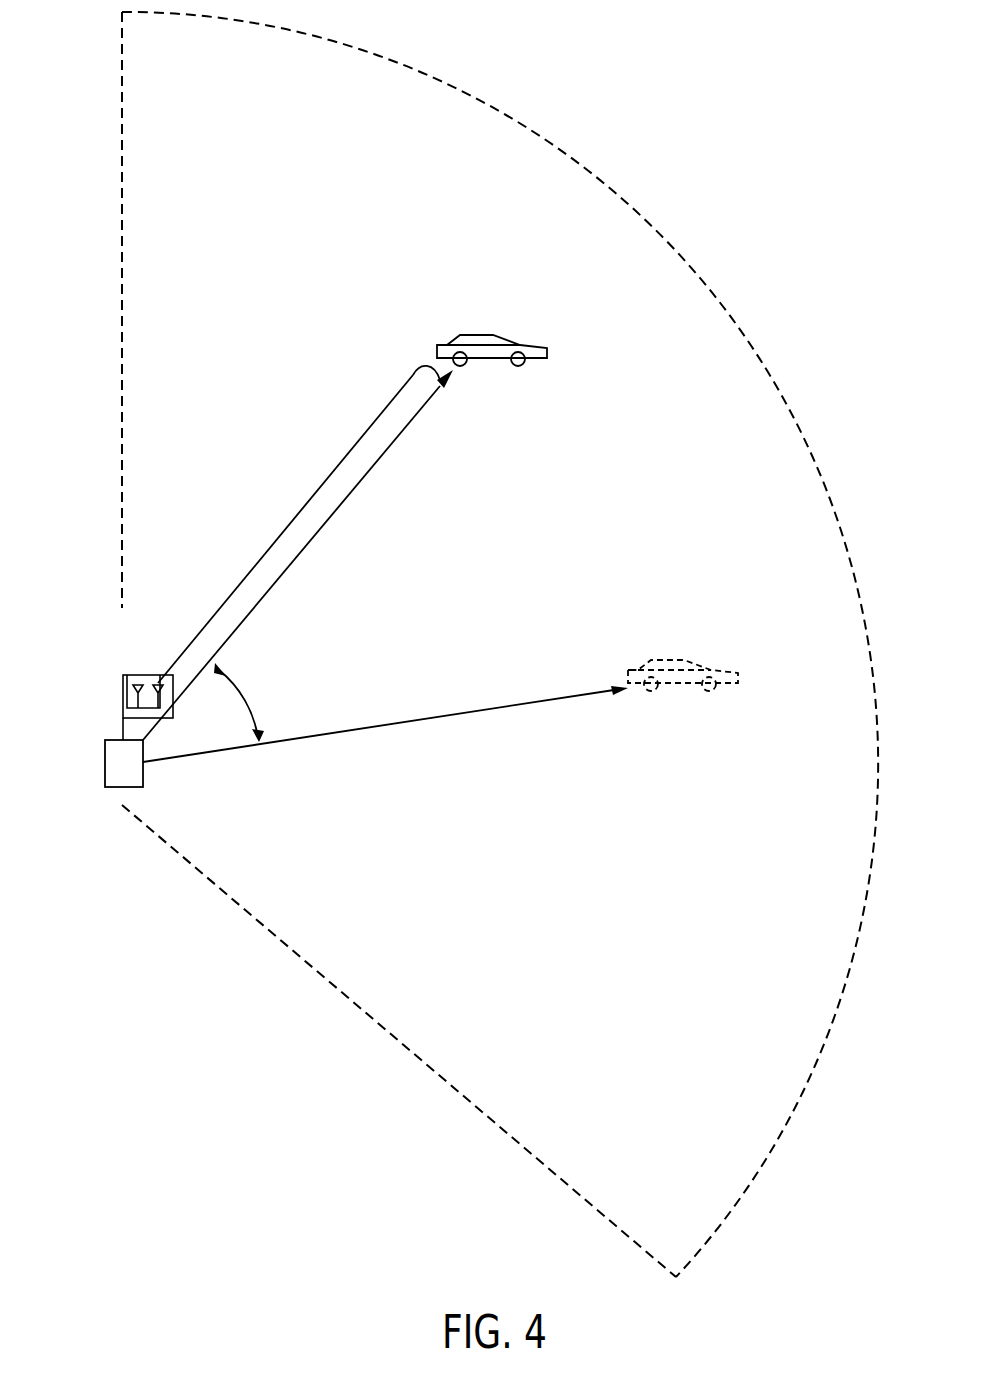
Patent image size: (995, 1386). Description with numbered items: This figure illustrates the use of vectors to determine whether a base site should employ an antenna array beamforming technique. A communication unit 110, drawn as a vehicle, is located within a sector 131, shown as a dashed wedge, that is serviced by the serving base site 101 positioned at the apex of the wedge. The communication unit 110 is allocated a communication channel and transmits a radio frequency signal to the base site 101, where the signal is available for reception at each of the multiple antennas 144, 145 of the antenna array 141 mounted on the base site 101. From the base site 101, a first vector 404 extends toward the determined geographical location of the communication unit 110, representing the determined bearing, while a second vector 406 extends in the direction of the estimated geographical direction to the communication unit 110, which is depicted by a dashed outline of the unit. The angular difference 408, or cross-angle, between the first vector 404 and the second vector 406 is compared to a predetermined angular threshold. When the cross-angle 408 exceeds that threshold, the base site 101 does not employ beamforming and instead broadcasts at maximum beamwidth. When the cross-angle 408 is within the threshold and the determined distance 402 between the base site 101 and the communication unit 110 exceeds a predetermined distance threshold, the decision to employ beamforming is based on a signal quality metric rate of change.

The base site 101 is at (104, 768).
The communication unit 110 is at (483, 333).
The sector 131 is at (445, 100).
The antenna array 141 is at (125, 679).
The antenna 144 is at (158, 683).
The antenna 145 is at (136, 700).
The determined distance 402 is at (298, 553).
The first vector 404 is at (358, 485).
The second vector 406 is at (433, 720).
The angular difference 408 is at (249, 706).